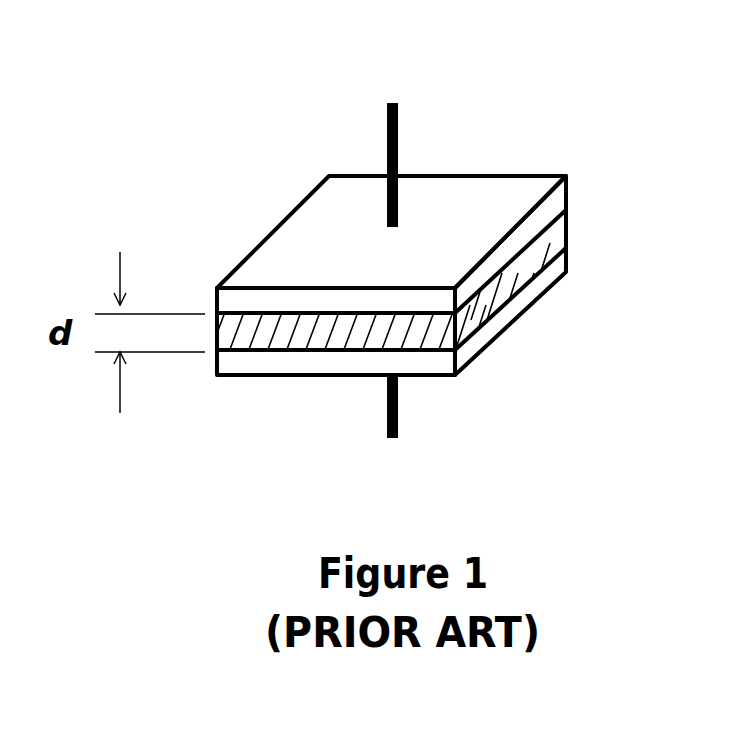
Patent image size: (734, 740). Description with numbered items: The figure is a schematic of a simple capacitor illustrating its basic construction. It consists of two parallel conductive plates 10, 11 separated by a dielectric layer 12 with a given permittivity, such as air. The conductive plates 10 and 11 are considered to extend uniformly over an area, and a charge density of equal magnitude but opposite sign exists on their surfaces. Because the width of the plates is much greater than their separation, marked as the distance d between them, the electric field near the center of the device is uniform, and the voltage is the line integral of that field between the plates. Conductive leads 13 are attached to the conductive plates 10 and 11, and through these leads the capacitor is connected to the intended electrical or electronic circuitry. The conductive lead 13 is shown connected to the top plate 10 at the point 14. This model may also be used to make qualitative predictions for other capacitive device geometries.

The conductive plate 10 is at (505, 198).
The conductive plate 11 is at (518, 320).
The dielectric layer 12 is at (569, 213).
The conductive leads 13 is at (380, 138).
The point 14 is at (380, 222).